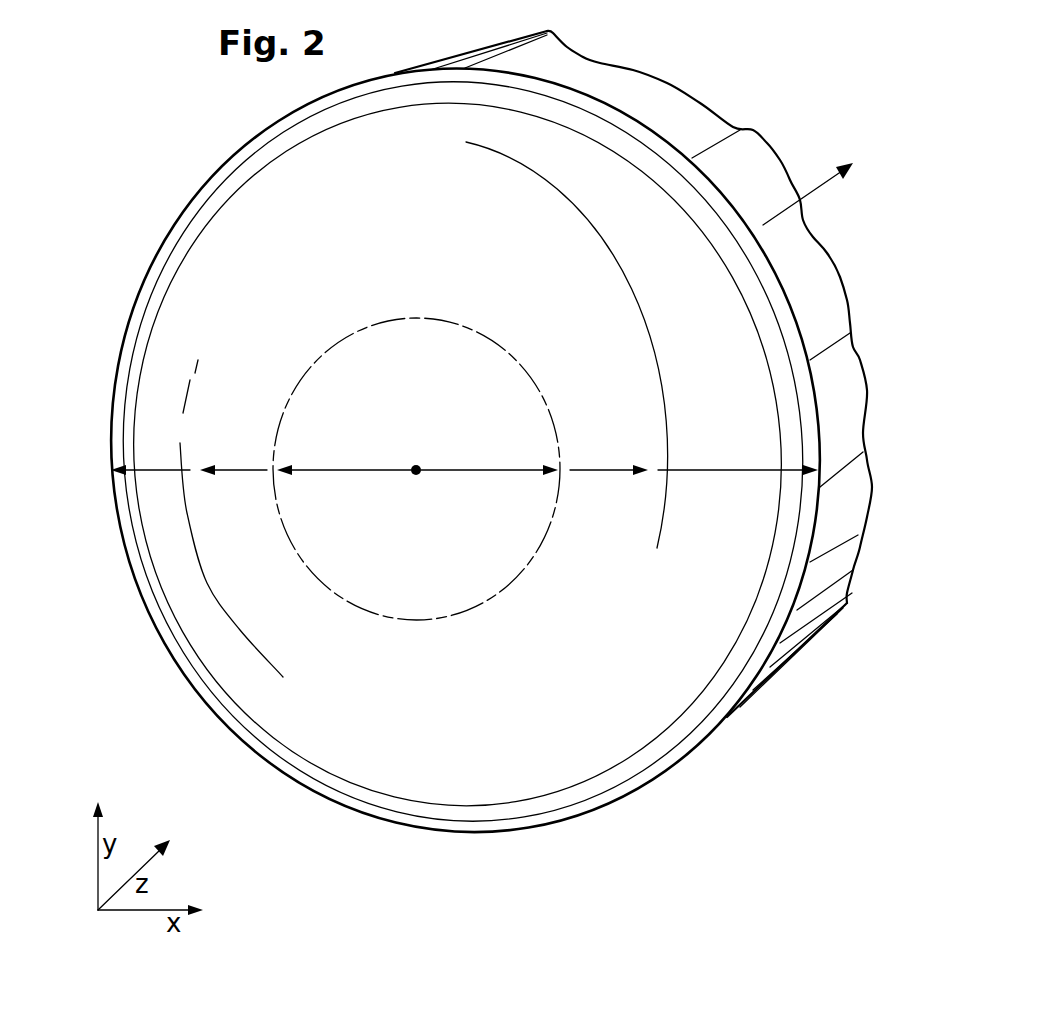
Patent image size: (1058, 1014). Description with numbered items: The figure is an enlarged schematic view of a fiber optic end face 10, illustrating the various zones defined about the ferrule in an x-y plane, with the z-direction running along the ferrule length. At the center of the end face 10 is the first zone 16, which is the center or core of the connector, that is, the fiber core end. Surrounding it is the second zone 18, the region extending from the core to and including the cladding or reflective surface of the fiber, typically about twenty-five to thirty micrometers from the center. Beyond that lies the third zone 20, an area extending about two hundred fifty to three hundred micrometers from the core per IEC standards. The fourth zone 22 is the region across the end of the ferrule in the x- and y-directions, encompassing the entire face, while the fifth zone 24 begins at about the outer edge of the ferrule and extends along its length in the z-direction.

The fiber optic end face 10 is at (166, 190).
The Zone 1 16 is at (416, 473).
The Zone 2 18 is at (348, 470).
The Zone 3 20 is at (242, 470).
The Zone 4 22 is at (160, 472).
The Zone 5 24 is at (823, 185).